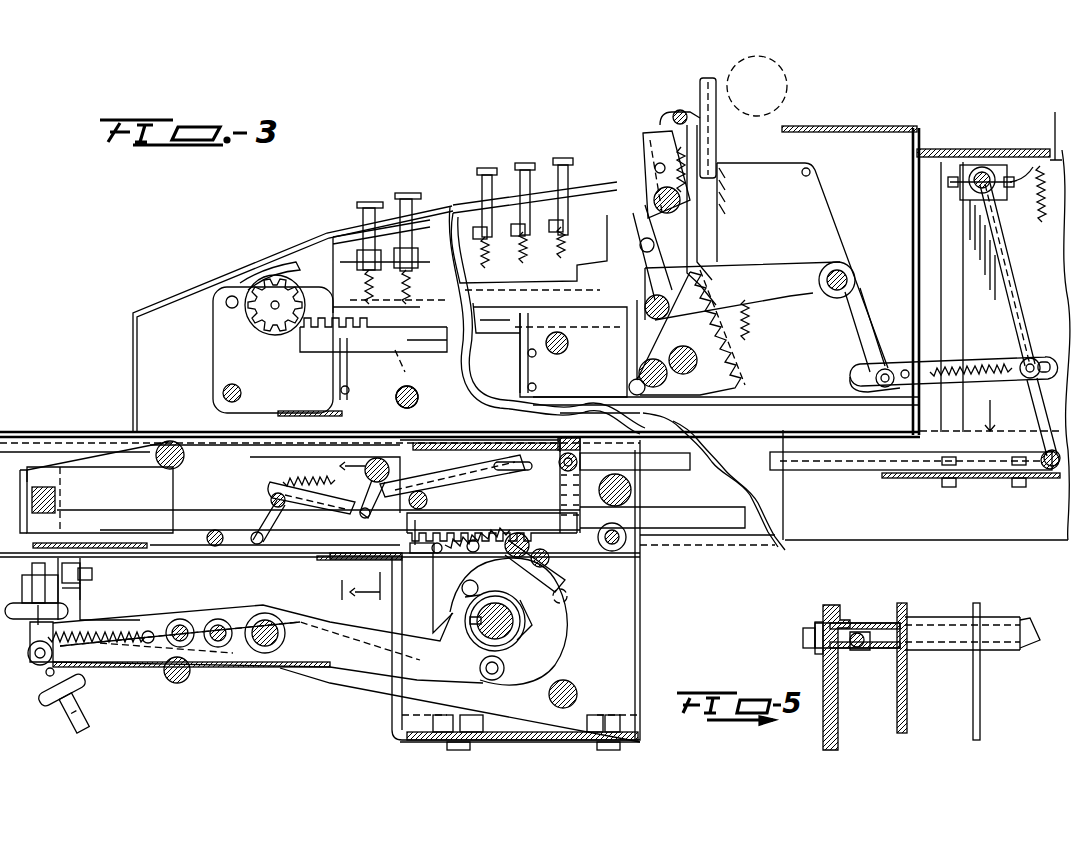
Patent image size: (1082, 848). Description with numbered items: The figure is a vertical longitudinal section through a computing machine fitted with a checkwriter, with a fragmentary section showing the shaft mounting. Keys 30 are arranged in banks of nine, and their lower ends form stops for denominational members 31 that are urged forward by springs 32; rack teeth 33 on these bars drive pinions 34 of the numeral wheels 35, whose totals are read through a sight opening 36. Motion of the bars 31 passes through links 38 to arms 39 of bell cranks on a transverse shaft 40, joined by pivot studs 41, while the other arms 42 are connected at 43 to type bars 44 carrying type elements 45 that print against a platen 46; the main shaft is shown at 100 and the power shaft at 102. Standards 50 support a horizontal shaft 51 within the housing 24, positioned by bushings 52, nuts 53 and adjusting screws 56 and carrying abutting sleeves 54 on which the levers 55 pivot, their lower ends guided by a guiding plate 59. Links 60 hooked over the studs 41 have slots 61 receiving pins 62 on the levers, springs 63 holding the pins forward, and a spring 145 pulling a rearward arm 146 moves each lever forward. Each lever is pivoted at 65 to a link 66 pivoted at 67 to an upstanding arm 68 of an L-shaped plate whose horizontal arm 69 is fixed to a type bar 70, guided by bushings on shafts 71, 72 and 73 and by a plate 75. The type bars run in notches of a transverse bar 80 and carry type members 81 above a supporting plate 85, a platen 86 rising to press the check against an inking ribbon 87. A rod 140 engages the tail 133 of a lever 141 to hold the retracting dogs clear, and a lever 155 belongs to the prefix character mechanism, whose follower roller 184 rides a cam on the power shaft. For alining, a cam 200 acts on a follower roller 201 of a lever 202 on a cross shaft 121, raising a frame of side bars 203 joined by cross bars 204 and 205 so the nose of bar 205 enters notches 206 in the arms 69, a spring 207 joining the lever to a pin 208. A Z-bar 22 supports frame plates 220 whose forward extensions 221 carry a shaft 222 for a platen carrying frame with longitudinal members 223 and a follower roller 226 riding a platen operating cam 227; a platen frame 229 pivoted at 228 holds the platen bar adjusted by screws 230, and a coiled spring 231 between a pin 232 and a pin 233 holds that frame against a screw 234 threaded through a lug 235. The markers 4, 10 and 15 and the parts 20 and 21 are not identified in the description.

In FIG. 3, the section line 4 is at (1053, 128).
In FIG. 3, the pivot 10 is at (364, 529).
In FIG. 3, the pin 15 is at (989, 407).
In FIG. 3, the housing 20 is at (166, 302).
In FIG. 3, the base plate 21 is at (890, 530).
In FIG. 3, the Z-bar 22 is at (510, 742).
In FIG. 3, the housing 24 is at (965, 150).
In FIG. 3, the keys 30 is at (415, 193).
In FIG. 3, the denominational members 31 is at (595, 315).
In FIG. 3, the springs 32 is at (488, 325).
In FIG. 3, the rack teeth 33 is at (320, 316).
In FIG. 3, the pinions 34 is at (262, 325).
In FIG. 3, the numeral wheels 35 is at (255, 308).
In FIG. 3, the sight opening 36 is at (252, 270).
In FIG. 3, the links 38 is at (725, 403).
In FIG. 3, the arms 39 is at (865, 330).
In FIG. 3, the transverse shaft 40 is at (852, 272).
In FIG. 3, the pivot studs 41 is at (890, 368).
In FIG. 3, the arms 42 is at (770, 282).
In FIG. 3, the pivotal connection 43 is at (712, 300).
In FIG. 3, the type bars 44 is at (720, 210).
In FIG. 3, the type elements 45 is at (700, 78).
In FIG. 3, the platen 46 is at (785, 65).
In FIG. 3, the standards 50 is at (960, 275).
In FIG. 5, the standards 50 is at (840, 732).
In FIG. 3, the horizontal shaft 51 is at (986, 166).
In FIG. 5, the horizontal shaft 51 is at (897, 650).
In FIG. 5, the bushings 52 is at (820, 622).
In FIG. 5, the nuts 53 is at (805, 628).
In FIG. 5, the sleeves 54 is at (880, 622).
In FIG. 3, the lever 55 is at (1012, 292).
In FIG. 5, the lever 55 is at (975, 690).
In FIG. 3, the adjusting screws 56 is at (953, 188).
In FIG. 5, the adjusting screws 56 is at (858, 652).
In FIG. 3, the guiding plate 59 is at (918, 480).
In FIG. 3, the links 60 is at (980, 362).
In FIG. 3, the slots 61 is at (1036, 358).
In FIG. 3, the pins 62 is at (1028, 355).
In FIG. 3, the springs 63 is at (990, 366).
In FIG. 3, the pivotal connection 65 is at (1048, 472).
In FIG. 3, the links 66 is at (672, 470).
In FIG. 3, the pivot 67 is at (562, 466).
In FIG. 3, the upstanding arms 68 is at (565, 498).
In FIG. 3, the horizontal arms 69 is at (455, 518).
In FIG. 3, the type bars 70 is at (210, 545).
In FIG. 3, the shaft 71 is at (622, 547).
In FIG. 3, the shaft 72 is at (428, 500).
In FIG. 3, the shaft 73 is at (215, 548).
In FIG. 3, the plate 75 is at (490, 446).
In FIG. 3, the transverse bar 80 is at (58, 492).
In FIG. 3, the type members 81 is at (112, 525).
In FIG. 3, the supporting plate 85 is at (150, 560).
In FIG. 3, the platen 86 is at (35, 594).
In FIG. 3, the inking ribbon 87 is at (32, 545).
In FIG. 3, the main shaft 100 is at (398, 403).
In FIG. 3, the power shaft 102 is at (470, 620).
In FIG. 3, the cross shaft 121 is at (532, 545).
In FIG. 3, the tail 133 is at (283, 548).
In FIG. 3, the rod 140 is at (256, 546).
In FIG. 3, the lever 141 is at (313, 478).
In FIG. 3, the spring 145 is at (1032, 165).
In FIG. 3, the rearwardly extending arm 146 is at (1040, 204).
In FIG. 3, the lever 155 is at (238, 448).
In FIG. 3, the follower roller 184 is at (568, 597).
In FIG. 3, the cam 200 is at (530, 640).
In FIG. 3, the follower roller 201 is at (457, 597).
In FIG. 3, the lever 202 is at (482, 572).
In FIG. 3, the side bars 203 is at (429, 593).
In FIG. 3, the cross bar 204 is at (558, 560).
In FIG. 3, the cross bar 205 is at (422, 553).
In FIG. 3, the notches 206 is at (445, 537).
In FIG. 3, the spring 207 is at (485, 552).
In FIG. 3, the pin 208 is at (440, 547).
In FIG. 3, the frame plates 220 is at (640, 608).
In FIG. 3, the forward extensions 221 is at (350, 690).
In FIG. 3, the shaft 222 is at (287, 633).
In FIG. 3, the longitudinal members 223 is at (130, 655).
In FIG. 3, the follower roller 226 is at (500, 680).
In FIG. 3, the platen operating cam 227 is at (560, 572).
In FIG. 3, the pivot 228 is at (50, 712).
In FIG. 3, the platen frame 229 is at (30, 658).
In FIG. 3, the adjusting screws 230 is at (80, 608).
In FIG. 3, the coiled spring 231 is at (100, 632).
In FIG. 3, the pin 232 is at (152, 645).
In FIG. 3, the pin 233 is at (45, 675).
In FIG. 3, the screw 234 is at (95, 570).
In FIG. 3, the lug 235 is at (80, 592).